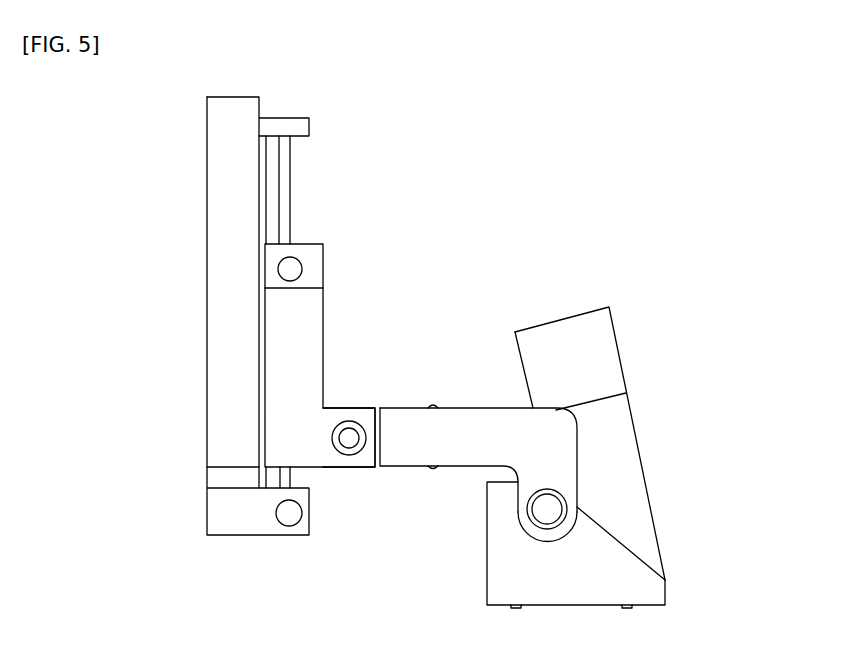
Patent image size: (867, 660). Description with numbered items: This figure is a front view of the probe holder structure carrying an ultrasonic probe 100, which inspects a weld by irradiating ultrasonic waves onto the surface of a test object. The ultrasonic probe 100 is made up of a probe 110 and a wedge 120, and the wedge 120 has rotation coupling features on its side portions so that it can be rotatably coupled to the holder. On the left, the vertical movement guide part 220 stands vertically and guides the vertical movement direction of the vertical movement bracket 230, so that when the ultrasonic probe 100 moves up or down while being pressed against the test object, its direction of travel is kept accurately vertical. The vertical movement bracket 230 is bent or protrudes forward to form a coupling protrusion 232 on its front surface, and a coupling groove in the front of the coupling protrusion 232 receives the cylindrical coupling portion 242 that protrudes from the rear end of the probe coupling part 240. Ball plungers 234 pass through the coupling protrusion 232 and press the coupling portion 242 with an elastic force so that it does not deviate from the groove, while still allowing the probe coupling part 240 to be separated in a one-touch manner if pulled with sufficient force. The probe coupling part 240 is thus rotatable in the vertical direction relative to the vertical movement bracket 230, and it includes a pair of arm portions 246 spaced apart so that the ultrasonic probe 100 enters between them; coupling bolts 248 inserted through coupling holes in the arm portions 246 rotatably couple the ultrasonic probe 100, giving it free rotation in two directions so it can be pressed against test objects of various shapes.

The ultrasonic probe 100 is at (654, 458).
The probe 110 is at (632, 483).
The wedge 120 is at (762, 462).
The vertical movement guide part 220 is at (222, 190).
The vertical movement bracket 230 is at (278, 318).
The coupling protrusion 232 is at (320, 432).
The ball plungers 234 is at (348, 440).
The probe coupling part 240 is at (454, 441).
The coupling portion 242 is at (378, 408).
The arm portions 246 is at (453, 417).
The coupling bolts 248 is at (547, 508).